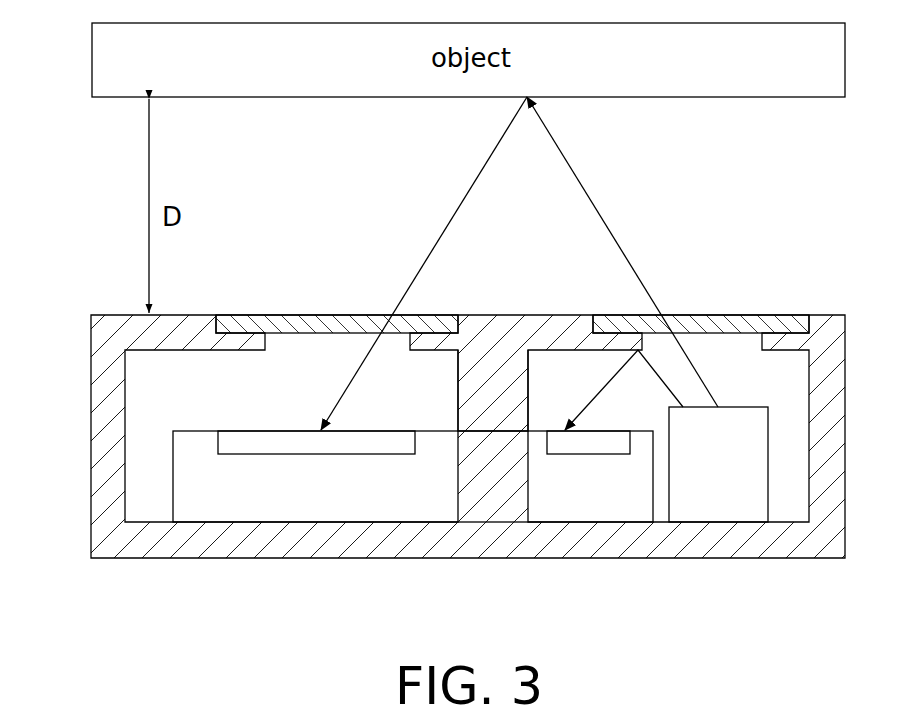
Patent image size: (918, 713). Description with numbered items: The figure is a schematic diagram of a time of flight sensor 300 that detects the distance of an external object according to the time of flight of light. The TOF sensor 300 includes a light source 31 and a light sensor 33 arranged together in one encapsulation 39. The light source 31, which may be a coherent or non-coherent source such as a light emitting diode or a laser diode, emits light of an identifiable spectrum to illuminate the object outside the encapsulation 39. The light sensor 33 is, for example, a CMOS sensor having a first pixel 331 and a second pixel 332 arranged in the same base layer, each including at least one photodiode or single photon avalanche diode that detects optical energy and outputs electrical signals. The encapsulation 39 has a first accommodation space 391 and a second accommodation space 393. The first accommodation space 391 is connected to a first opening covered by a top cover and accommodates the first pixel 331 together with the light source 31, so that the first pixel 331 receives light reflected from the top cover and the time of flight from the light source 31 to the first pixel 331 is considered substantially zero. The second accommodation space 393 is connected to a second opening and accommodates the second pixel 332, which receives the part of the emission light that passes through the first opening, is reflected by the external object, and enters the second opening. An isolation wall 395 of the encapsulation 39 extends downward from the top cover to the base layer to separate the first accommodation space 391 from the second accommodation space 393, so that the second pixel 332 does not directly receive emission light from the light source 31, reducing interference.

The time of flight (TOF) sensor 300 is at (86, 291).
The encapsulation 39 is at (107, 441).
The second accommodation space 393 is at (315, 365).
The first accommodation space 391 is at (726, 358).
The isolation wall 395 is at (498, 407).
The light sensor 33 is at (342, 497).
The second pixel 332 is at (260, 441).
The first pixel 331 is at (588, 456).
The light source 31 is at (707, 508).